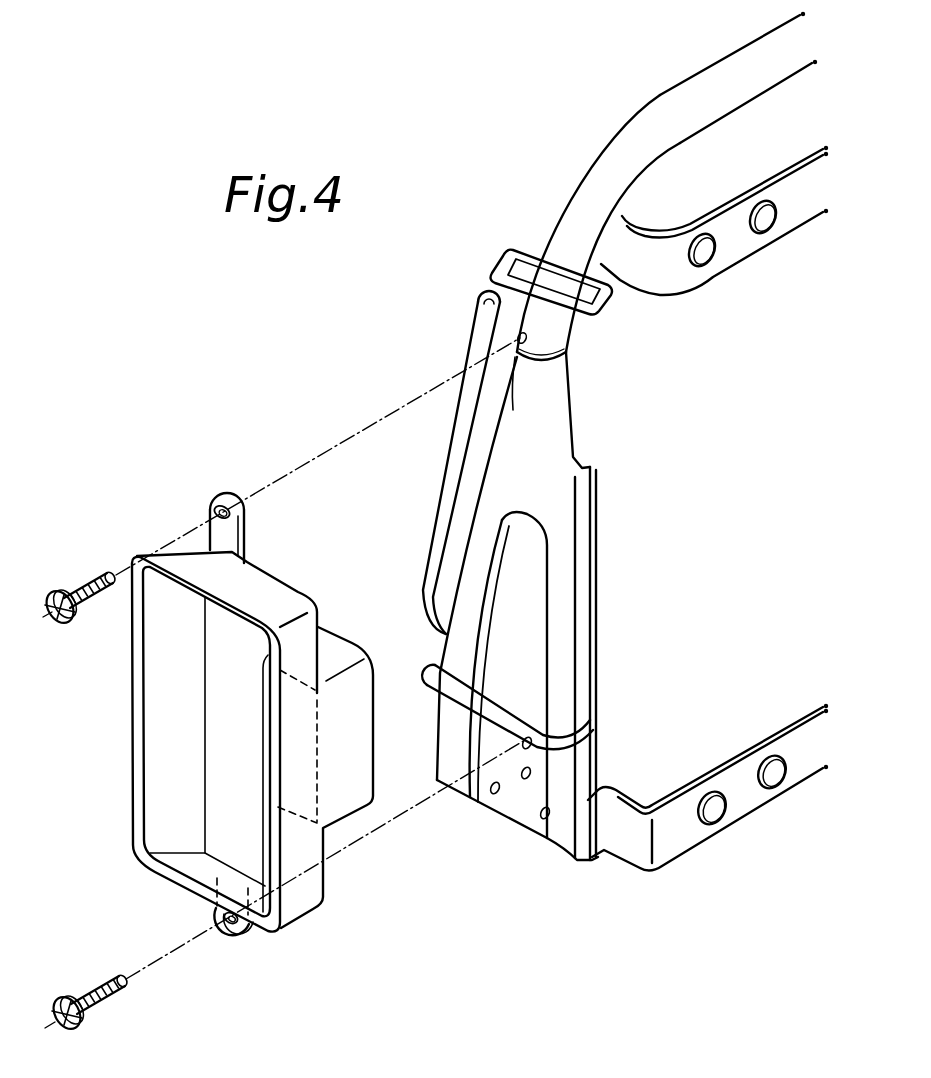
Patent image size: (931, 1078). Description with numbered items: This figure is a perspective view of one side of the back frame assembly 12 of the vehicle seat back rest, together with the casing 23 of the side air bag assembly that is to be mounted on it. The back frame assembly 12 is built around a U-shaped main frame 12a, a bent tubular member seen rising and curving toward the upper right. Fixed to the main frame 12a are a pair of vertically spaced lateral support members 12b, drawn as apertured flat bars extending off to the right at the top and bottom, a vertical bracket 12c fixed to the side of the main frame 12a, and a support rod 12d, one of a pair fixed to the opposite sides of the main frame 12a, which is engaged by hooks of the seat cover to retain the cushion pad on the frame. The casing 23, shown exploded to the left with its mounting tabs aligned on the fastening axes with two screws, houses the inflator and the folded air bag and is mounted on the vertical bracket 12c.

The back frame assembly 12 is at (630, 120).
The U-shaped main frame 12a is at (744, 59).
The lateral support members 12b is at (730, 253).
The vertical brackets 12c is at (593, 563).
The support rods 12d is at (477, 340).
The casing 23 is at (267, 590).